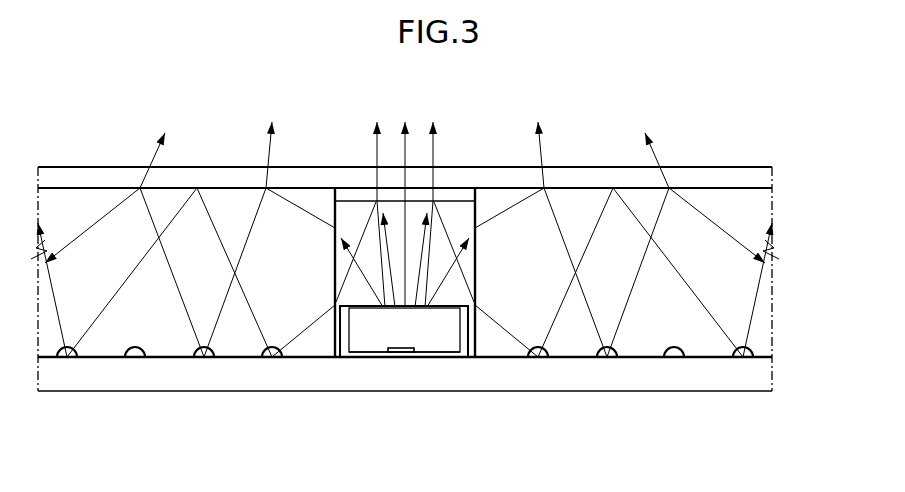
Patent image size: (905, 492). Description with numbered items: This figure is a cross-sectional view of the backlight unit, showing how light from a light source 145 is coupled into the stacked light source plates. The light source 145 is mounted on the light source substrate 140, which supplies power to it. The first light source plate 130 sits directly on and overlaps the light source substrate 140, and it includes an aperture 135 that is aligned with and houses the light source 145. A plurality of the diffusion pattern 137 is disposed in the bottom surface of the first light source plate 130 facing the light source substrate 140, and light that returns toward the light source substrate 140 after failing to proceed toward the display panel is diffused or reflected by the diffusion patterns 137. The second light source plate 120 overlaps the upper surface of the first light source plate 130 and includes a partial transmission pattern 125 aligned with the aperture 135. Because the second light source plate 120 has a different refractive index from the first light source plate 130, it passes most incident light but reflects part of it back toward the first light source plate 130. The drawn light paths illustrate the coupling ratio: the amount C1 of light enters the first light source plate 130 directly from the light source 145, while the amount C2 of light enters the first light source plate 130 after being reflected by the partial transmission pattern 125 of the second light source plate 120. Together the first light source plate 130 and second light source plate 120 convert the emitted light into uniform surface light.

The second light source plate 120 is at (754, 179).
The first light source plate 130 is at (757, 206).
The partial transmission pattern 125 is at (347, 197).
The amount of light directly input C1 is at (492, 210).
The amount of light input after reflection C2 is at (510, 330).
The diffusion pattern 137 is at (748, 349).
The light source substrate 140 is at (754, 374).
The aperture 135 is at (469, 330).
The light source 145 is at (433, 353).